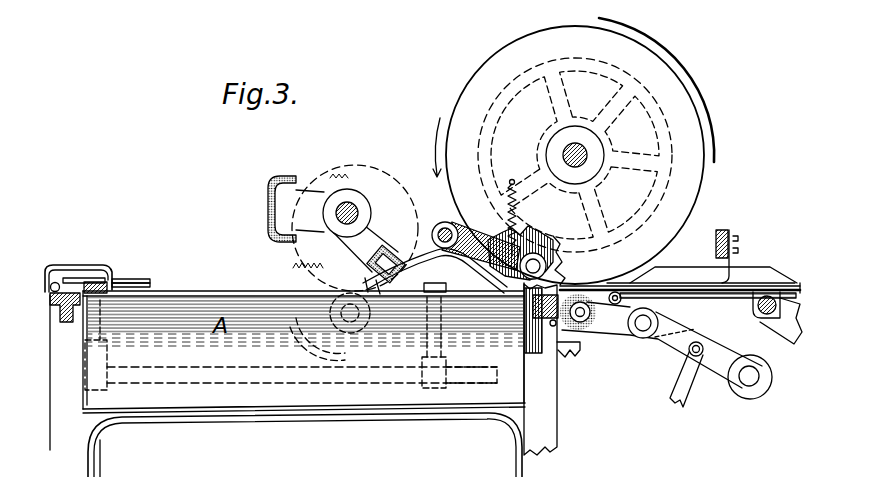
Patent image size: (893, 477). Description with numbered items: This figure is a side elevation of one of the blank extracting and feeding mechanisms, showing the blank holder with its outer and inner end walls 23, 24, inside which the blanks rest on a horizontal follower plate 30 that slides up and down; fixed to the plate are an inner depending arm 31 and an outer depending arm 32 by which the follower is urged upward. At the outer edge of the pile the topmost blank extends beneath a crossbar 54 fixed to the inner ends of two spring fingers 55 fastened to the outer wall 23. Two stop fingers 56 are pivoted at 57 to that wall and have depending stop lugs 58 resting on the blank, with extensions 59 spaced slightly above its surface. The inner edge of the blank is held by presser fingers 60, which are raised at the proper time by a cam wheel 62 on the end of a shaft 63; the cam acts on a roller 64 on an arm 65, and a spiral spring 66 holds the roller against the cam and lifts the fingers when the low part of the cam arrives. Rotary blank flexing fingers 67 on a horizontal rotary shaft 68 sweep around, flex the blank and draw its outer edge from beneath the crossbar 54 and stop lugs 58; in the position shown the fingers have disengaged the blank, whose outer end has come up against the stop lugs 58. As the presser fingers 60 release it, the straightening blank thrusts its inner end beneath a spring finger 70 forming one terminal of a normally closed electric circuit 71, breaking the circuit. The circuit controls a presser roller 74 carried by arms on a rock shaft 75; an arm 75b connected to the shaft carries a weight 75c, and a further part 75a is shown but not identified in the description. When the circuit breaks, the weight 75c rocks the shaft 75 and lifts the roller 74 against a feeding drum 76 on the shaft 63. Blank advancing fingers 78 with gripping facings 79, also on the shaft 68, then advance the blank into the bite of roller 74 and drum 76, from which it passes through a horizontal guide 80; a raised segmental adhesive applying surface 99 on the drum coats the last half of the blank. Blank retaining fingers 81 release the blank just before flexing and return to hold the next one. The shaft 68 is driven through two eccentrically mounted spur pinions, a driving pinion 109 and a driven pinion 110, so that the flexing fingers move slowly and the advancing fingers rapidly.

The outer end wall 23 is at (61, 372).
The inner end wall 24 is at (540, 369).
The follower plate 30 is at (258, 413).
The inner depending arm 31 is at (511, 453).
The outer depending arm 32 is at (101, 470).
The crossbar 54 is at (105, 279).
The spring fingers 55 is at (78, 279).
The stop fingers 56 is at (66, 266).
The pivot 57 is at (50, 291).
The stop lugs 58 is at (118, 286).
The extensions 59 is at (142, 282).
The presser fingers 60 is at (497, 288).
The cam wheel 62 is at (542, 231).
The shaft 63 is at (576, 140).
The roller 64 is at (548, 266).
The arm 65 is at (462, 228).
The spiral spring 66 is at (507, 228).
The blank flexing fingers 67 is at (376, 246).
The rotary shaft 68 is at (354, 212).
The spring finger 70 is at (562, 275).
The electric circuit 71 is at (573, 368).
The presser roller 74 is at (588, 298).
The rock shaft 75 is at (638, 330).
The link arm 75a is at (690, 386).
The arm 75b is at (678, 339).
The weight 75c is at (784, 323).
The feeding drum 76 is at (531, 39).
The blank advancing fingers 78 is at (303, 201).
The blank gripping facings 79 is at (283, 178).
The horizontal guide 80 is at (653, 292).
The blank retaining fingers 81 is at (428, 292).
The adhesive applying surface 99 is at (628, 42).
The driving pinion 109 is at (296, 267).
The driven pinion 110 is at (383, 173).